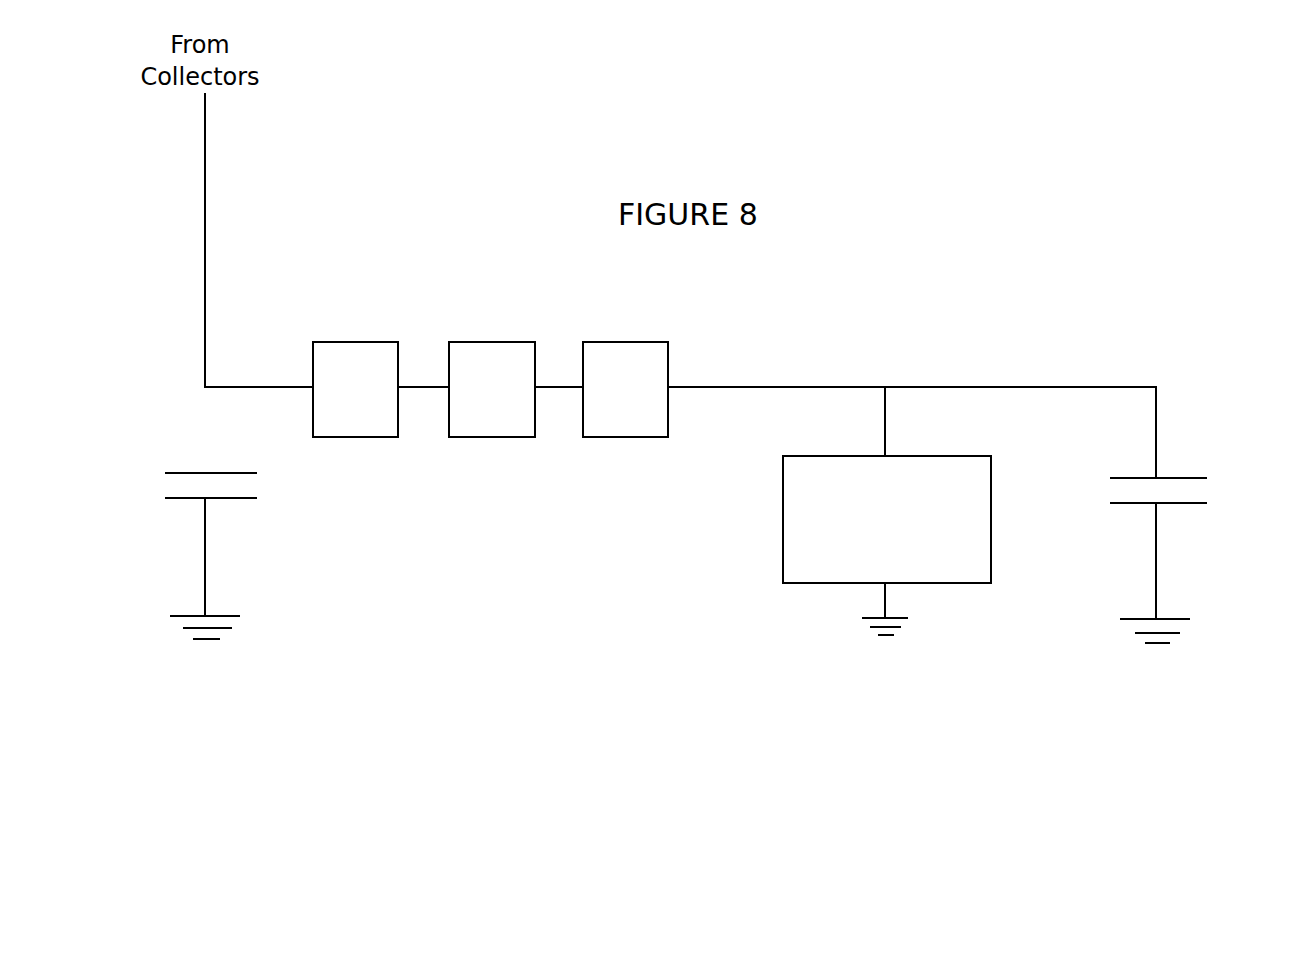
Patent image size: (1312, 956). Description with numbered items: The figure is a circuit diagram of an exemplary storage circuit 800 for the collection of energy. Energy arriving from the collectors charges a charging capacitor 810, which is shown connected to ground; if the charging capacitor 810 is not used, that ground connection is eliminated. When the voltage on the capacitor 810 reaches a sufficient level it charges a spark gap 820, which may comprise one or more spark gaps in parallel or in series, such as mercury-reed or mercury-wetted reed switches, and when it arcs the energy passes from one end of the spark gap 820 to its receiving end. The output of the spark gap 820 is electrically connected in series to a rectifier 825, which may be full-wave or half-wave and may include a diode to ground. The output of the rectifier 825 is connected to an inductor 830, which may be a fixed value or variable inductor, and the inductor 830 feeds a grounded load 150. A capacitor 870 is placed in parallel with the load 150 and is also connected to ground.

The storage circuit 800 is at (393, 216).
The charging capacitor 810 is at (192, 482).
The spark gap 820 is at (335, 402).
The rectifier 825 is at (485, 397).
The inductor 830 is at (620, 397).
The load 150 is at (955, 557).
The capacitor 870 is at (1177, 487).